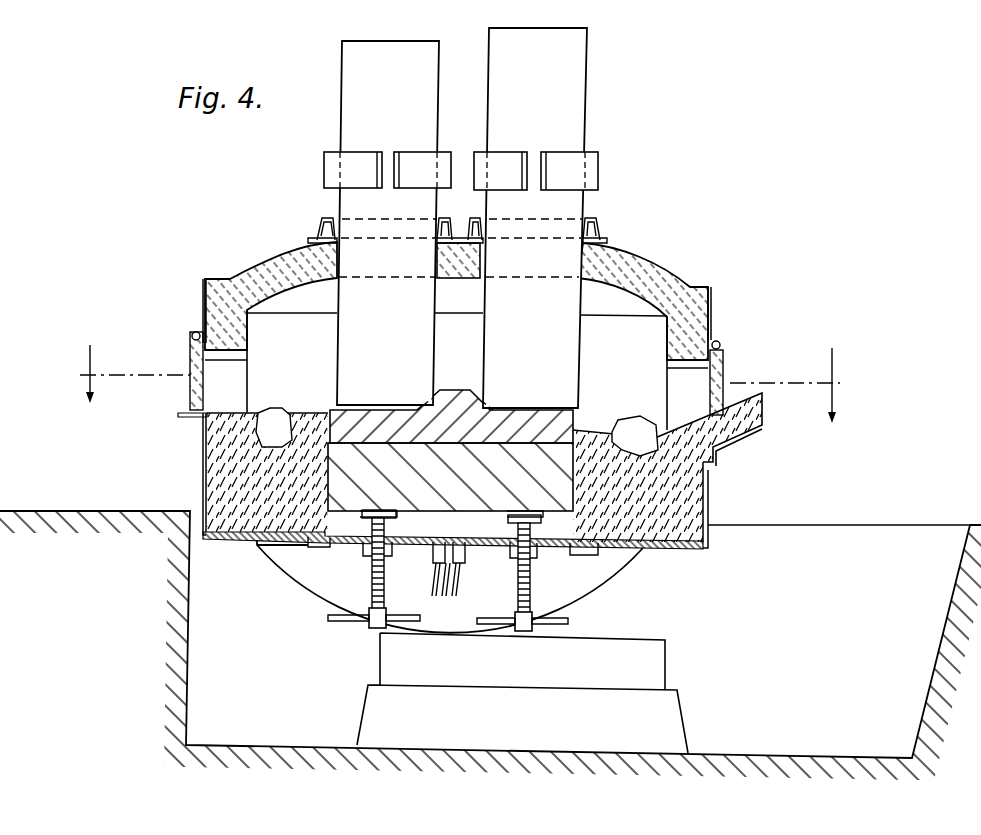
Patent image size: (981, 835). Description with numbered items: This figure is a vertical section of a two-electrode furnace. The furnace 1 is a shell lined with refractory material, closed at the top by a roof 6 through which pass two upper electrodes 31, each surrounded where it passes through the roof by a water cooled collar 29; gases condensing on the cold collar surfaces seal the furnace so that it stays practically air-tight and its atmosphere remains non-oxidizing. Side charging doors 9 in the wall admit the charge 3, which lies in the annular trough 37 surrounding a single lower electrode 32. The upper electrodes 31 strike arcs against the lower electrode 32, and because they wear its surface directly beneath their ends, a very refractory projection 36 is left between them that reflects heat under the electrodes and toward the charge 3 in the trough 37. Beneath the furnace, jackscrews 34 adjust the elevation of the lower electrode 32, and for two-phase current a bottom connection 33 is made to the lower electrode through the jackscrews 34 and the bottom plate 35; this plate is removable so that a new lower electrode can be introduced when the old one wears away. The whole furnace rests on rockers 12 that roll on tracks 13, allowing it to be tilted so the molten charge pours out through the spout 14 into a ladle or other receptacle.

The furnace chamber 1 is at (246, 334).
The charge 3 is at (643, 418).
The roof 6 is at (272, 264).
The side charging doors 9 is at (227, 376).
The rockers 12 is at (608, 591).
The tracks 13 is at (522, 693).
The spout 14 is at (758, 408).
The water cooled collars 29 is at (617, 231).
The upper electrodes 31 is at (461, 219).
The lower electrode 32 is at (432, 500).
The bottom connection 33 is at (462, 586).
The jackscrews 34 is at (532, 579).
The bottom plate 35 is at (412, 546).
The projection 36 is at (455, 390).
The trough 37 is at (660, 465).